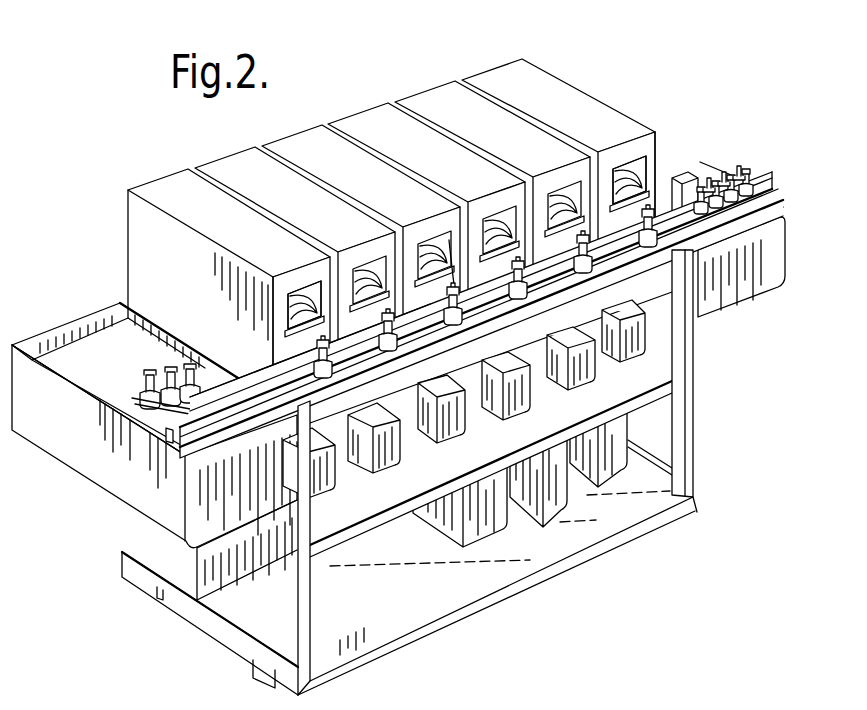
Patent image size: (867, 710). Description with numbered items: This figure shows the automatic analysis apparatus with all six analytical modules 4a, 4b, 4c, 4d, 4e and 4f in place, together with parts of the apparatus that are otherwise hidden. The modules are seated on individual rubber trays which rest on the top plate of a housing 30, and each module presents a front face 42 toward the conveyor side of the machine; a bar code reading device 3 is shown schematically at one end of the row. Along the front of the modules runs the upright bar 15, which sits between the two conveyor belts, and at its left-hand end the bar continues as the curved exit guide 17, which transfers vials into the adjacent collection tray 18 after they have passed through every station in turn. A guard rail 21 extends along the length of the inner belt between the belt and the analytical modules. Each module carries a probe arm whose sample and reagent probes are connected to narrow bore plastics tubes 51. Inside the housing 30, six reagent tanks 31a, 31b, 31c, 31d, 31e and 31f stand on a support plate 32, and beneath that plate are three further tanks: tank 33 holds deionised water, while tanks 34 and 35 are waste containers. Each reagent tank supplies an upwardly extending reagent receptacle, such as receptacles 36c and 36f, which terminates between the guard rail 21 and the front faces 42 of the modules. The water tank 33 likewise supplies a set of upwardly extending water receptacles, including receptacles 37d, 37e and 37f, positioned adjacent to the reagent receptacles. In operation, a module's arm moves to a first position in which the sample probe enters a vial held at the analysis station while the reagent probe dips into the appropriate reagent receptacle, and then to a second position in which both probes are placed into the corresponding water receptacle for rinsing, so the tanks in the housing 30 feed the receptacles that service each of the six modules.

The bar code reading device 3 is at (683, 178).
The analytical module 4a is at (502, 74).
The analytical module 4b is at (432, 97).
The analytical module 4c is at (426, 186).
The analytical module 4d is at (361, 207).
The analytical module 4e is at (295, 229).
The analytical module 4f is at (229, 252).
The upright bar 15 is at (254, 405).
The exit guide 17 is at (168, 442).
The collection tray 18 is at (80, 352).
The guard rail 21 is at (278, 383).
The housing 30 is at (485, 581).
The reagent tank 31a is at (643, 344).
The reagent tank 31b is at (584, 368).
The reagent tank 31c is at (529, 404).
The reagent tank 31d is at (466, 424).
The reagent tank 31e is at (386, 462).
The reagent tank 31f is at (326, 487).
The support plate 32 is at (658, 378).
The water tank 33 is at (604, 470).
The waste container 34 is at (562, 498).
The waste container 35 is at (486, 518).
The reagent receptacle 36c is at (497, 262).
The reagent receptacle 36f is at (289, 312).
The water receptacle 37d is at (416, 283).
The water receptacle 37e is at (352, 262).
The water receptacle 37f is at (286, 356).
The front face 42 is at (655, 132).
The narrow bore plastics tube 51 is at (449, 240).